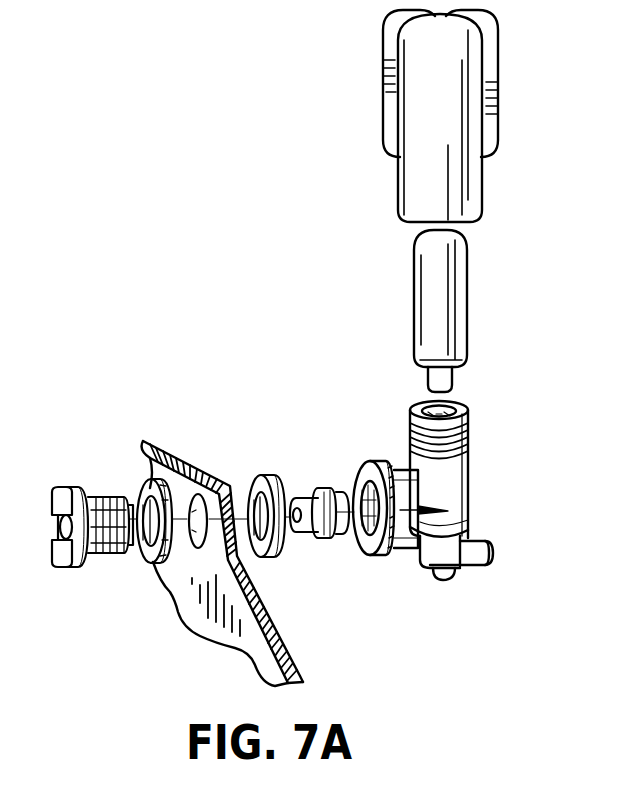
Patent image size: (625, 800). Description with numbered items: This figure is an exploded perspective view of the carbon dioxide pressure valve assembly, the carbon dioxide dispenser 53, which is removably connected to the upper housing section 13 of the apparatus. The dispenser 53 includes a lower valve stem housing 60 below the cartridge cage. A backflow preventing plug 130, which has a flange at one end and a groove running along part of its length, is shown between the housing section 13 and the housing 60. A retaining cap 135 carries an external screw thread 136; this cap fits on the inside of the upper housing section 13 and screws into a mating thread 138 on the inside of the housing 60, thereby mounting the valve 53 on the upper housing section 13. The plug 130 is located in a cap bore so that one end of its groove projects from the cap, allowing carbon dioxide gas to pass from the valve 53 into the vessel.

The upper housing section 13 is at (185, 445).
The carbon dioxide dispenser 53 is at (297, 392).
The valve stem housing 60 is at (445, 481).
The backflow preventing plug 130 is at (335, 538).
The retaining cap 135 is at (66, 563).
The external screw thread 136 is at (110, 565).
The mating thread 138 is at (360, 487).